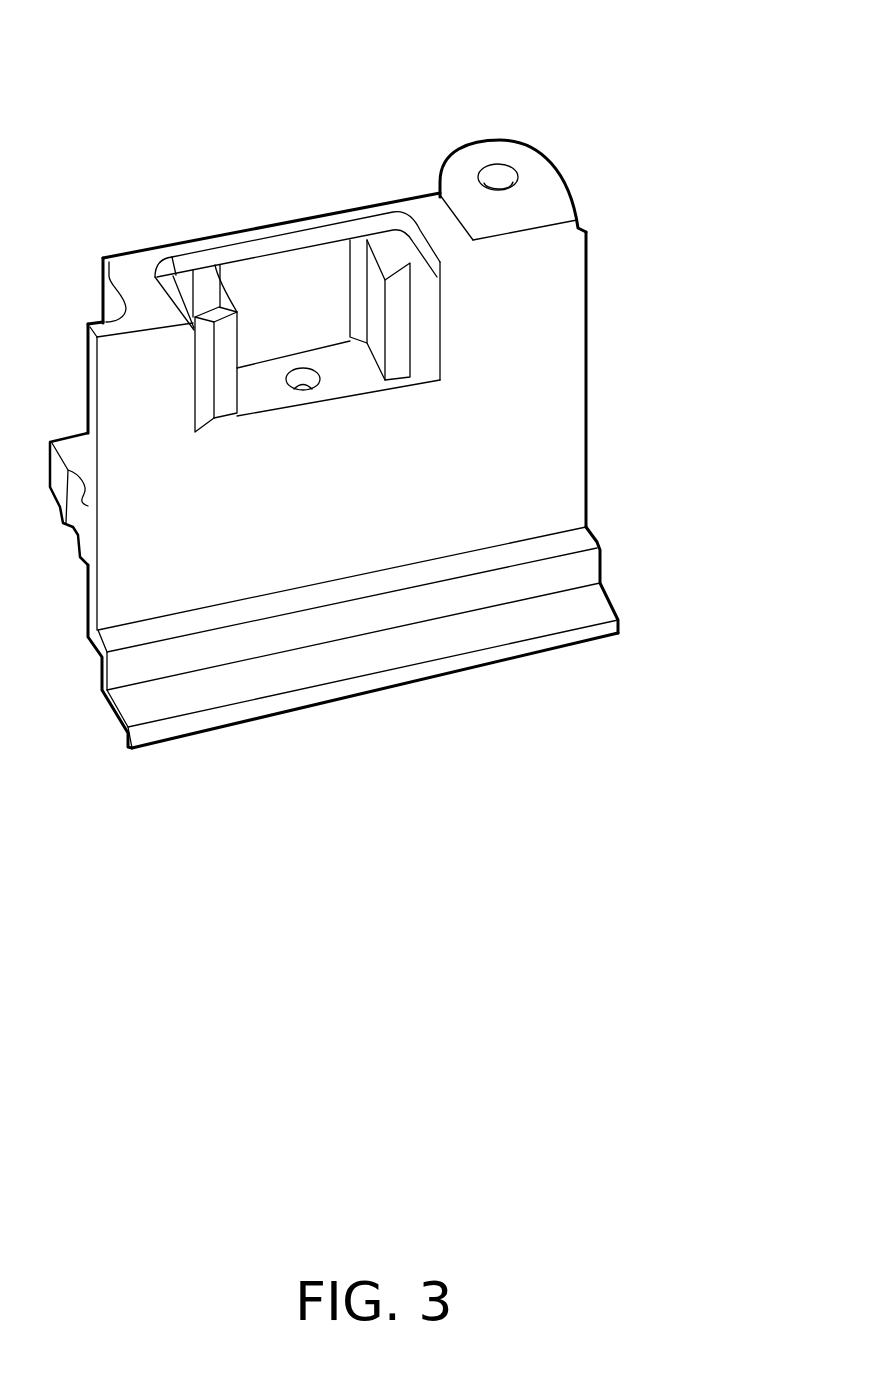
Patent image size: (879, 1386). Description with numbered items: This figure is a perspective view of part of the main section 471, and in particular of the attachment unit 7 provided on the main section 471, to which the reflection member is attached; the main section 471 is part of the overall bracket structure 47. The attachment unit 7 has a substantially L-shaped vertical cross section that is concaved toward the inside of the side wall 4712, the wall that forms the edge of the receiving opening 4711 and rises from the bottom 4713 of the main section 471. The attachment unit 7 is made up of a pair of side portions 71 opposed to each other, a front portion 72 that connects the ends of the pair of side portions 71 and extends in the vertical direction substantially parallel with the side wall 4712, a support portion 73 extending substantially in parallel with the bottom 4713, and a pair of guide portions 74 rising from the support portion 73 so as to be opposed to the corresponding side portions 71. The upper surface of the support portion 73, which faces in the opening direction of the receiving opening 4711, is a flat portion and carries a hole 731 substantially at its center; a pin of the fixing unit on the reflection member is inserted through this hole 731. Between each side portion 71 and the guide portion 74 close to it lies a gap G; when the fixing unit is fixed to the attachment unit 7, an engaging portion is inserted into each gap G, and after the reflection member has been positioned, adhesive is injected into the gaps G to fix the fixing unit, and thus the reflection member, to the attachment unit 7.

The attachment unit 7 is at (373, 168).
The bracket 47 is at (570, 338).
The main section 471 is at (337, 278).
The receiving opening 4711 is at (125, 255).
The side wall 4712 is at (570, 425).
The bottom 4713 is at (437, 638).
The side portions 71 is at (197, 422).
The front portion 72 is at (273, 267).
The support portion 73 is at (260, 402).
The hole 731 is at (308, 389).
The guide portions 74 is at (217, 298).
The gap G is at (212, 364).